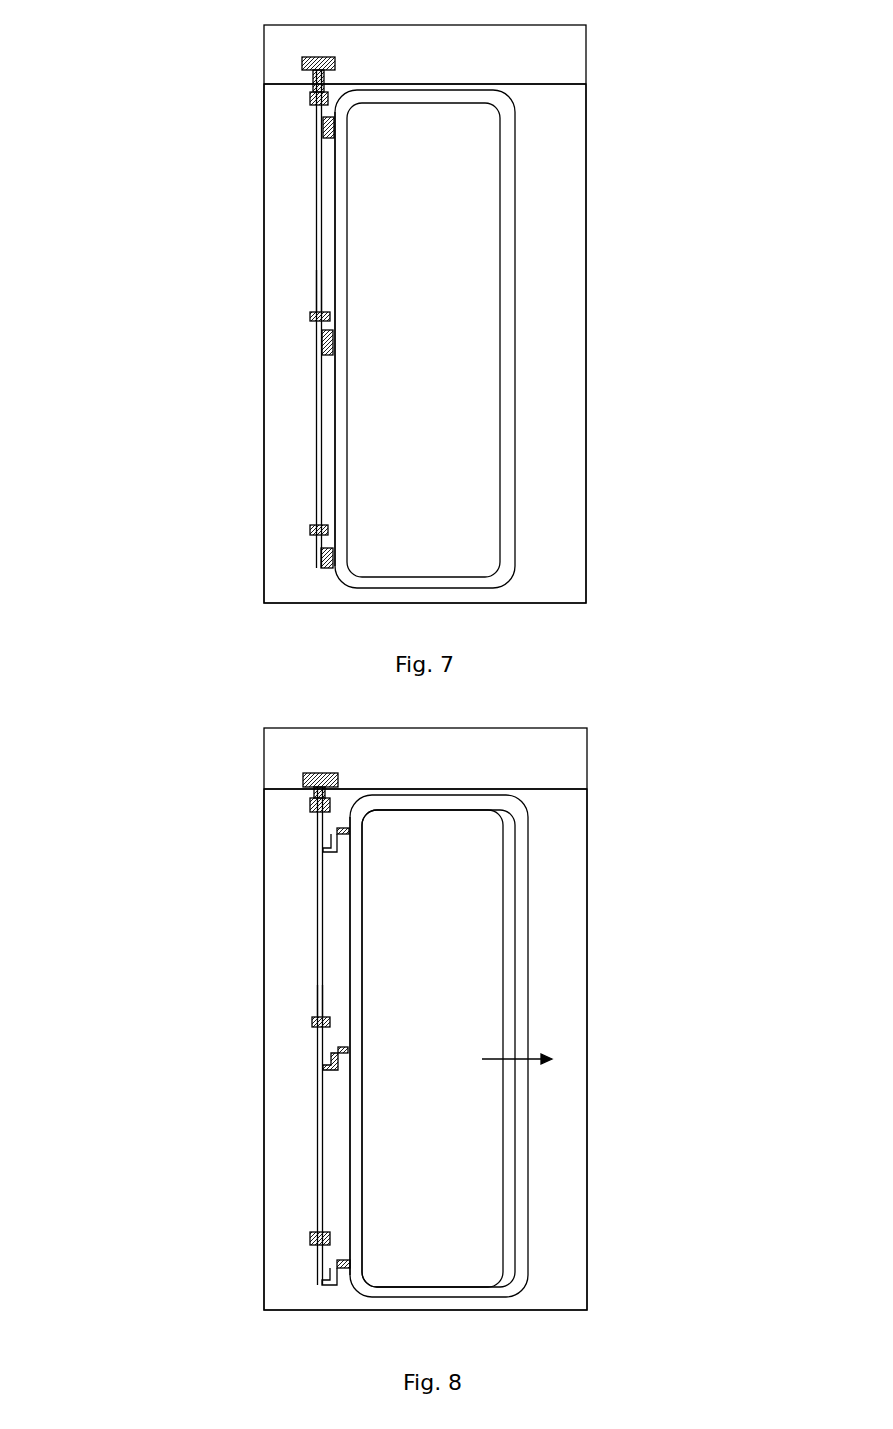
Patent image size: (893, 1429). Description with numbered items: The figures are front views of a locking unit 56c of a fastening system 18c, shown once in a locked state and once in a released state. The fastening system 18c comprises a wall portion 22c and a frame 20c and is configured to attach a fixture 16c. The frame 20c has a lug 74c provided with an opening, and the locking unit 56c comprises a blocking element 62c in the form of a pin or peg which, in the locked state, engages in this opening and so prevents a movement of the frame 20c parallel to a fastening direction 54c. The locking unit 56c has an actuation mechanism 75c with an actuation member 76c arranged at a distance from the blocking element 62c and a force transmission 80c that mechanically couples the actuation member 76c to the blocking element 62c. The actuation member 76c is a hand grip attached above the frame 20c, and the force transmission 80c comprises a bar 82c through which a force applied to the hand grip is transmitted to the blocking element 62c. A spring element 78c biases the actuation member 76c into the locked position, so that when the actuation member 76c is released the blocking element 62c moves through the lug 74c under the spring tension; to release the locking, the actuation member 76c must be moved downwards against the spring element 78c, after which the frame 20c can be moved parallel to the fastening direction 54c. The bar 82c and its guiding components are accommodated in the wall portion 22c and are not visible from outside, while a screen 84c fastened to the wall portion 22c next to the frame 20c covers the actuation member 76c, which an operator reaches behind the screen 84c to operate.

In FIG. 7, the fixture 16c is at (492, 171).
In FIG. 8, the fixture 16c is at (494, 885).
In FIG. 7, the fastening system 18c is at (614, 94).
In FIG. 8, the fastening system 18c is at (616, 813).
In FIG. 7, the frame 20c is at (513, 238).
In FIG. 8, the frame 20c is at (525, 940).
In FIG. 7, the wall portion 22c is at (567, 522).
In FIG. 8, the wall portion 22c is at (567, 1287).
In FIG. 8, the fastening direction 54c is at (520, 1062).
In FIG. 7, the locking unit 56c is at (277, 204).
In FIG. 8, the locking unit 56c is at (283, 921).
In FIG. 7, the blocking element 62c is at (318, 333).
In FIG. 8, the blocking element 62c is at (338, 1050).
In FIG. 7, the lug 74c is at (325, 350).
In FIG. 8, the lug 74c is at (333, 1062).
In FIG. 7, the actuation mechanism 75c is at (275, 134).
In FIG. 8, the actuation mechanism 75c is at (278, 848).
In FIG. 7, the actuation member 76c is at (303, 58).
In FIG. 8, the actuation member 76c is at (303, 779).
In FIG. 7, the spring element 78c is at (310, 93).
In FIG. 8, the spring element 78c is at (310, 800).
In FIG. 7, the force transmission 80c is at (295, 293).
In FIG. 8, the force transmission 80c is at (295, 1009).
In FIG. 7, the bar 82c is at (316, 268).
In FIG. 8, the bar 82c is at (318, 1000).
In FIG. 7, the screen 84c is at (573, 57).
In FIG. 8, the screen 84c is at (573, 757).